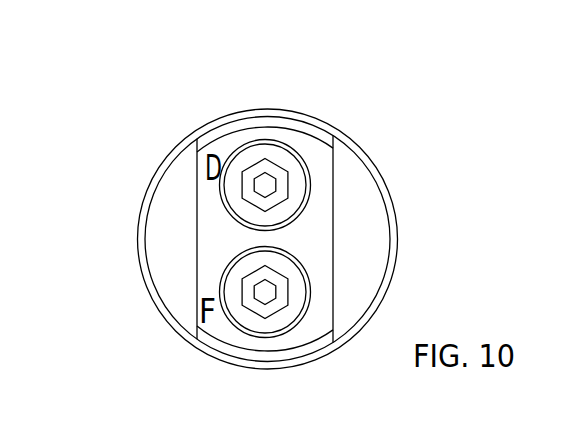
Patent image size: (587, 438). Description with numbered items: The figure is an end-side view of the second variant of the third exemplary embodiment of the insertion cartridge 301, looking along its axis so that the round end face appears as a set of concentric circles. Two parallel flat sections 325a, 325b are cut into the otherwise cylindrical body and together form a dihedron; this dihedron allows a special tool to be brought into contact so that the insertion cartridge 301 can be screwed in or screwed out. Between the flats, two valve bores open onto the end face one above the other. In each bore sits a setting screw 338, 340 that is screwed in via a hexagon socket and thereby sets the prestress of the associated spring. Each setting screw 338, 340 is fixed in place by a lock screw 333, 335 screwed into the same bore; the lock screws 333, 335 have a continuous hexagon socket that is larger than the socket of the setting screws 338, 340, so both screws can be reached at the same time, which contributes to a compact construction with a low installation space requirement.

The insertion cartridge 301 is at (400, 163).
The flat section 325a is at (196, 263).
The flat section 325b is at (334, 265).
The lock screw 333 is at (275, 320).
The lock screw 335 is at (282, 155).
The setting screw 338 is at (243, 305).
The setting screw 340 is at (252, 168).